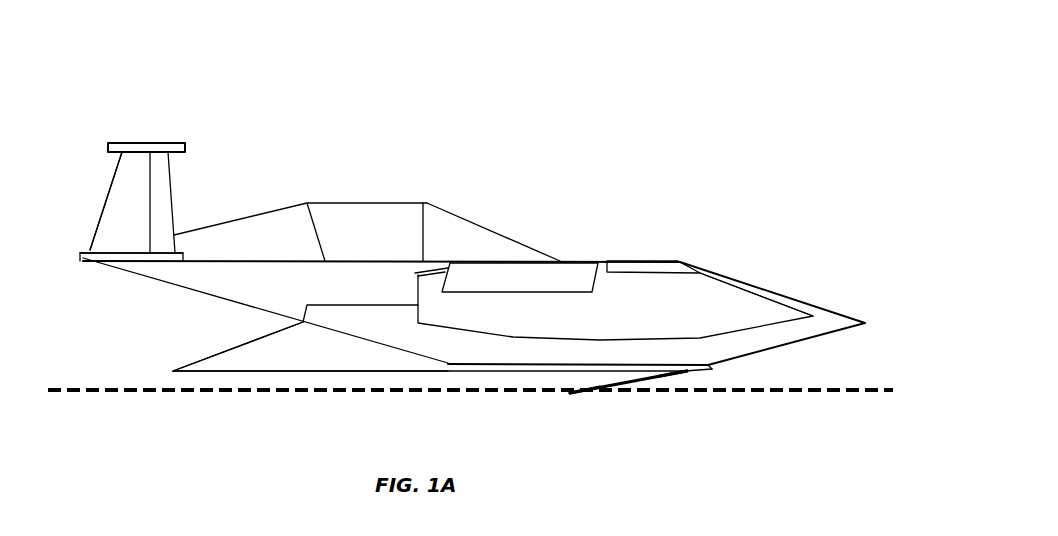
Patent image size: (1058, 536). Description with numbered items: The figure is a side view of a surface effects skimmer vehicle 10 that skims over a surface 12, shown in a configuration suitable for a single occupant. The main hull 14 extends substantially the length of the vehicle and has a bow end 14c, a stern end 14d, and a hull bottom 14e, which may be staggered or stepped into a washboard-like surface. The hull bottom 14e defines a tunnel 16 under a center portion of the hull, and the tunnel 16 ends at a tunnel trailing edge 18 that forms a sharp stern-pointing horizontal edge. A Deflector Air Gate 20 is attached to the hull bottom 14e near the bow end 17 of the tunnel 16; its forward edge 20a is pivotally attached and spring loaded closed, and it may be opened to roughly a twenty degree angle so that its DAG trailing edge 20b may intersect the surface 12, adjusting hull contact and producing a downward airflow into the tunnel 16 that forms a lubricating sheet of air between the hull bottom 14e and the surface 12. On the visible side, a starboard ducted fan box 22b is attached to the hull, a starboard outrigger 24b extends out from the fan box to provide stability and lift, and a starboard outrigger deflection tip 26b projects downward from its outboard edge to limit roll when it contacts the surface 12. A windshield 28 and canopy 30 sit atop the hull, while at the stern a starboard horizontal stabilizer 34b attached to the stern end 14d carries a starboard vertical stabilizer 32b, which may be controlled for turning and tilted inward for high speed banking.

The surface effects skimmer vehicle 10 is at (625, 151).
The surface 12 is at (168, 392).
The main hull 14 is at (775, 338).
The bow end 14c is at (833, 212).
The stern end 14d is at (210, 158).
The hull bottom 14e is at (455, 365).
The tunnel 16 is at (420, 372).
The bow end of the tunnel 17 is at (710, 372).
The tunnel trailing edge 18 is at (235, 365).
The Deflector Air Gate 20 is at (643, 373).
The forward edge of the DAG 20a is at (685, 372).
The DAG trailing edge 20b is at (570, 393).
The starboard ducted fan box 22b is at (700, 283).
The starboard outrigger 24b is at (607, 262).
The starboard outrigger deflection tip 26b is at (520, 277).
The windshield 28 is at (457, 233).
The canopy 30 is at (388, 208).
The starboard vertical stabilizer 32b is at (115, 228).
The starboard horizontal stabilizer 34b is at (117, 253).